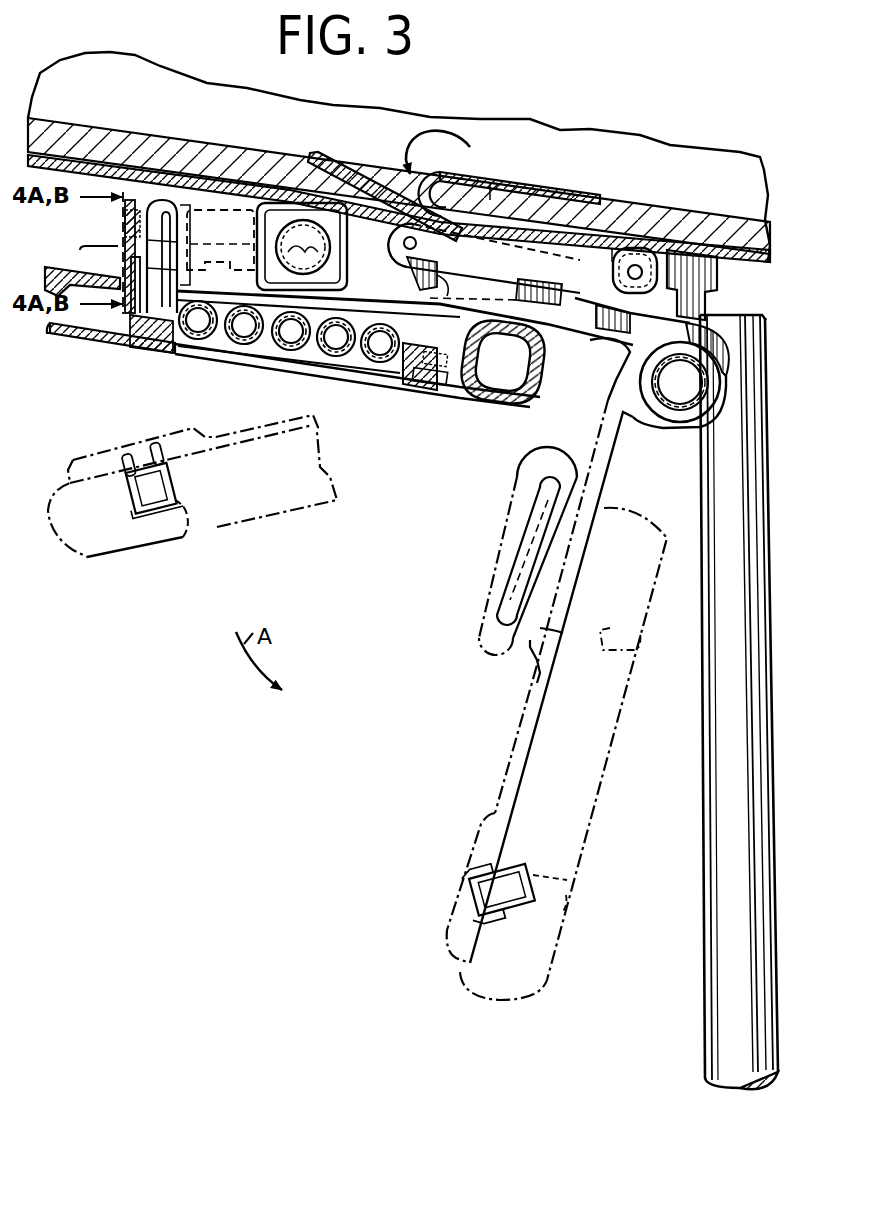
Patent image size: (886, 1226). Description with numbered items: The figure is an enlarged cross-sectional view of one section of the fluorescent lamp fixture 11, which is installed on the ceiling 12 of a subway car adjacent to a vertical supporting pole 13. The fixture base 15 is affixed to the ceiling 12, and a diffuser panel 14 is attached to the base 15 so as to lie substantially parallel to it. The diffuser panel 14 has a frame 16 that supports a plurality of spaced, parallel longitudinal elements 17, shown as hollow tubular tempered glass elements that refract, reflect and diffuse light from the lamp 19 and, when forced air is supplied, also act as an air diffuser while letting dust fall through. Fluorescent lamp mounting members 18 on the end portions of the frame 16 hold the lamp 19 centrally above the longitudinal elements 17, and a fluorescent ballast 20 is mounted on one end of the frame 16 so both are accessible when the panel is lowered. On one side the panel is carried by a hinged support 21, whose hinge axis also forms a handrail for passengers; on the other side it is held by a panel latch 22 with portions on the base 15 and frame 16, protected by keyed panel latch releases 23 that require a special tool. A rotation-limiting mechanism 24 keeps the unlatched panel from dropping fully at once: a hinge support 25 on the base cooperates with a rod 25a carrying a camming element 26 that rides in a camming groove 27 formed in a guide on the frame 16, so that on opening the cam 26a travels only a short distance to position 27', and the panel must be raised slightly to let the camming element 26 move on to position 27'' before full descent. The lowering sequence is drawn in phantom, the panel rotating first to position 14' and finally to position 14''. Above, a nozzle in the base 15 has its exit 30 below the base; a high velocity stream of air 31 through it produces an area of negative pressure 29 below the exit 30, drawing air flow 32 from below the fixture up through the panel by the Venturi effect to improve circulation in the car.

The fluorescent lamp fixture 11 is at (70, 353).
The ceiling 12 is at (56, 64).
The vertical supporting pole 13 is at (700, 832).
The diffuser panel 14 is at (405, 371).
The first rotated position of the diffuser panel 14' is at (205, 492).
The final rotated position of the diffuser panel 14'' is at (563, 754).
The fixture base 15 is at (137, 198).
The frame 16 is at (500, 396).
The longitudinal elements 17 is at (225, 340).
The fluorescent lamp mounting members 18 is at (352, 212).
The lamp 19 is at (245, 233).
The fluorescent ballast 20 is at (250, 206).
The hinged support 21 is at (628, 348).
The panel latch 22 is at (124, 227).
The panel latch release 23 is at (124, 214).
The rotation-limiting mechanism 24 is at (560, 236).
The hinge support 25 is at (602, 320).
The rod 25a is at (620, 246).
The camming element 26 is at (530, 292).
The cam 26a is at (404, 257).
The camming groove 27 is at (471, 431).
The first groove position 27' is at (511, 656).
The second groove position 27'' is at (497, 550).
The area of negative pressure 29 is at (516, 295).
The nozzle exit 30 is at (520, 226).
The high velocity stream of air 31 is at (443, 145).
The air flow through the fixture 32 is at (285, 352).